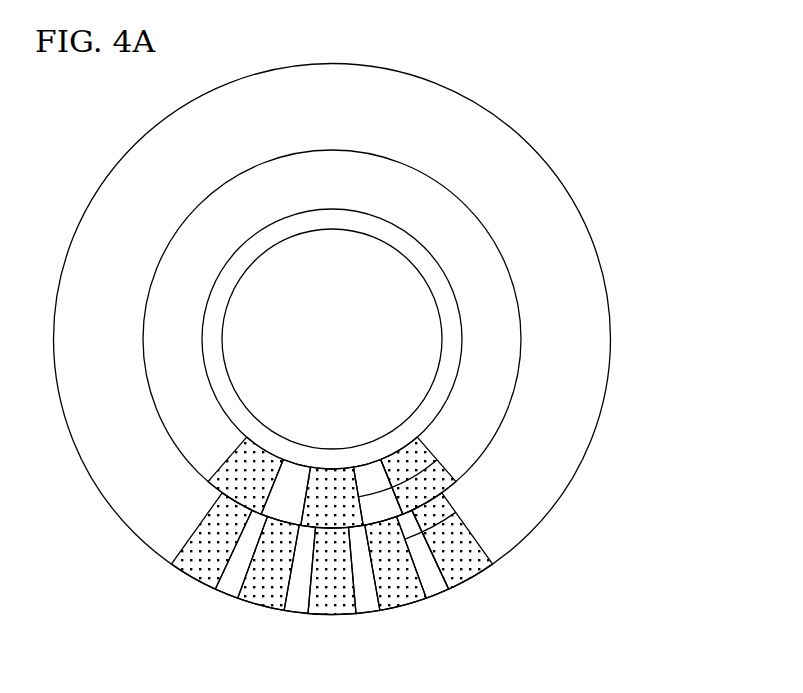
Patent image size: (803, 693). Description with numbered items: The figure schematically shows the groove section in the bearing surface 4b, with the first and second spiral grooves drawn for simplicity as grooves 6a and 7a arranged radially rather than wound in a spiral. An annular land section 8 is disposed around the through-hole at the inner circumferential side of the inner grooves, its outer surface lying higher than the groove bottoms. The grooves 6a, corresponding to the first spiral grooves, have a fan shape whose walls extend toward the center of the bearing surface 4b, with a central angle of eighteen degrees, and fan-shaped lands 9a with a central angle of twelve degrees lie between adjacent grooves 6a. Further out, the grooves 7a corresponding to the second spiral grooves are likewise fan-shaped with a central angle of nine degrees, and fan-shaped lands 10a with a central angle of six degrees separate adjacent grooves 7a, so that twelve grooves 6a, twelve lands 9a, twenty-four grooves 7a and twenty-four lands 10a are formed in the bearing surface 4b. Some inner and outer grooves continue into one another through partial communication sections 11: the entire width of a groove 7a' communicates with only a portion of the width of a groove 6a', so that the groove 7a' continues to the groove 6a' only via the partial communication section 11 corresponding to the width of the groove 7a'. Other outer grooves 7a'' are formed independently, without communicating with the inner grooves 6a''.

The bearing surface 4b is at (522, 148).
The land section 8 is at (328, 217).
The groove 6a is at (418, 437).
The groove 6a' is at (332, 463).
The groove 6a'' is at (246, 436).
The land 9a is at (295, 476).
The groove 7a is at (360, 569).
The groove 7a' is at (367, 600).
The groove 7a'' is at (269, 600).
The land 10a is at (228, 583).
The partial communication section 11 is at (333, 528).